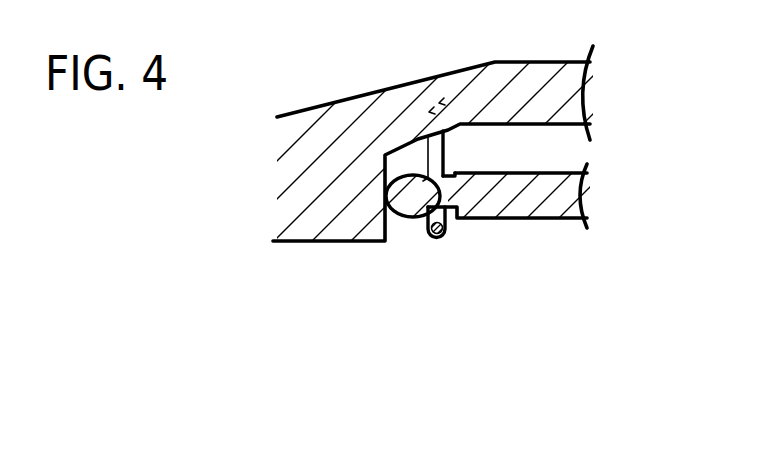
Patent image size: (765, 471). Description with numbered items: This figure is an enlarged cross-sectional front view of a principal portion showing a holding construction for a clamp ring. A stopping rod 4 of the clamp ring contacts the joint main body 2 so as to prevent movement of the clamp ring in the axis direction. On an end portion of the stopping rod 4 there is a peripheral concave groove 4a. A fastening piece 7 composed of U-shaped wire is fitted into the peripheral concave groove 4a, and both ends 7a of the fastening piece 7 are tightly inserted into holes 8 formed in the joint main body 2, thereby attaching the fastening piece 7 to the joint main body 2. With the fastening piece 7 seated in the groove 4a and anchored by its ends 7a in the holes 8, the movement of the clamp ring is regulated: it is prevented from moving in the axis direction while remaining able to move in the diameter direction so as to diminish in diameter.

The joint main body 2 is at (368, 82).
The stopping rod 4 is at (538, 208).
The peripheral concave groove 4a is at (451, 172).
The fastening piece 7 is at (454, 230).
The ends of the fastening piece 7a is at (451, 112).
The holes 8 is at (432, 116).